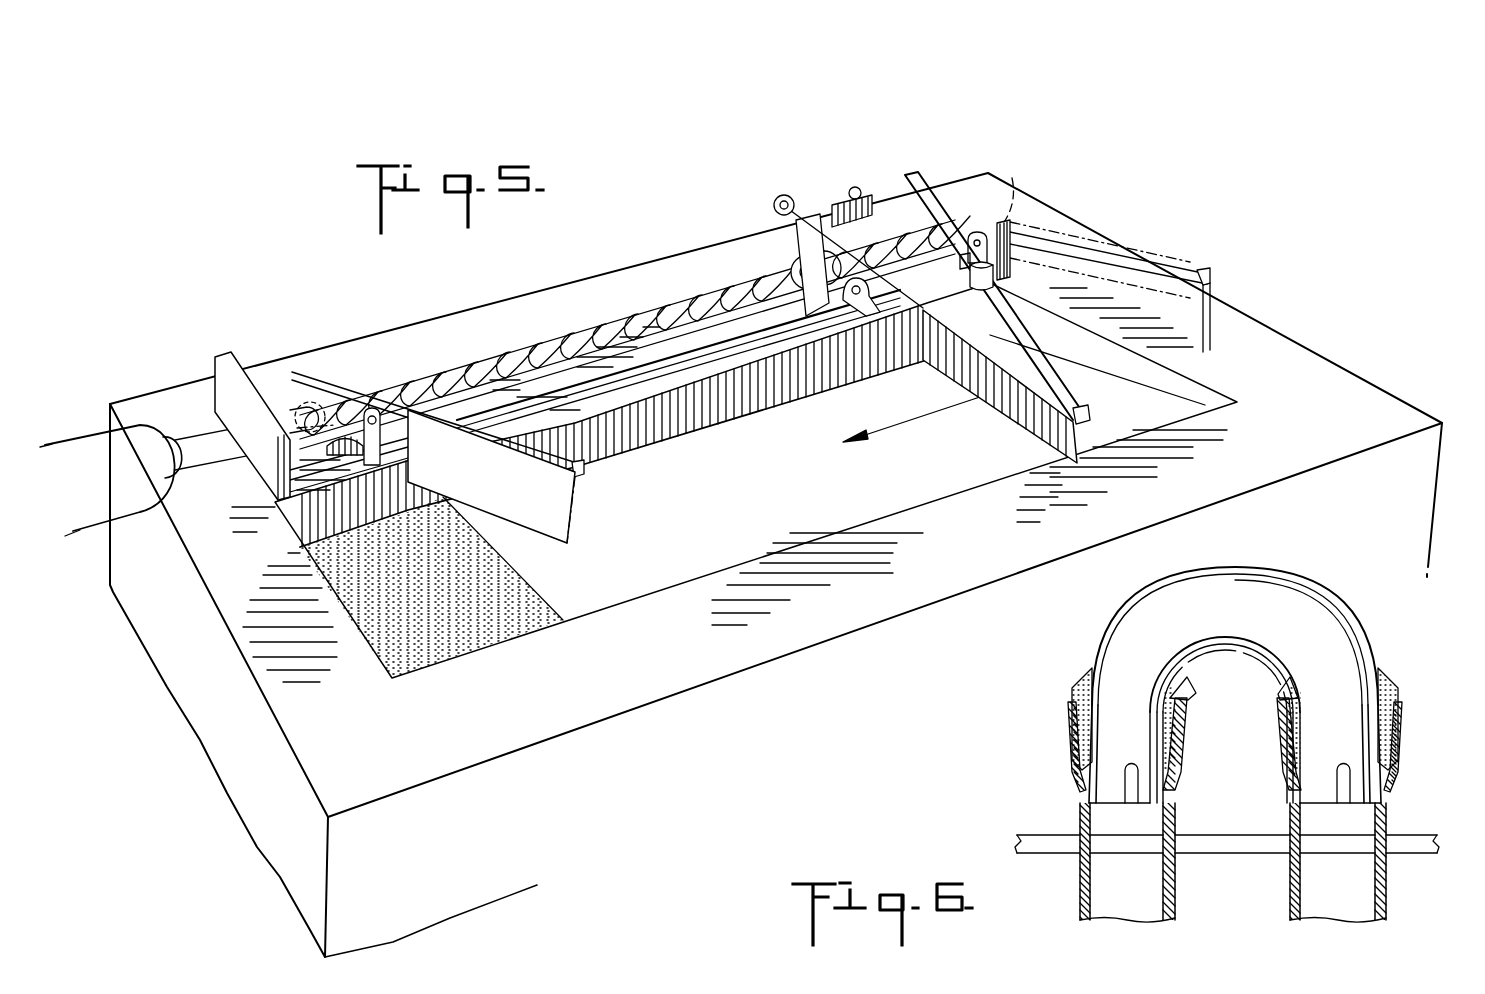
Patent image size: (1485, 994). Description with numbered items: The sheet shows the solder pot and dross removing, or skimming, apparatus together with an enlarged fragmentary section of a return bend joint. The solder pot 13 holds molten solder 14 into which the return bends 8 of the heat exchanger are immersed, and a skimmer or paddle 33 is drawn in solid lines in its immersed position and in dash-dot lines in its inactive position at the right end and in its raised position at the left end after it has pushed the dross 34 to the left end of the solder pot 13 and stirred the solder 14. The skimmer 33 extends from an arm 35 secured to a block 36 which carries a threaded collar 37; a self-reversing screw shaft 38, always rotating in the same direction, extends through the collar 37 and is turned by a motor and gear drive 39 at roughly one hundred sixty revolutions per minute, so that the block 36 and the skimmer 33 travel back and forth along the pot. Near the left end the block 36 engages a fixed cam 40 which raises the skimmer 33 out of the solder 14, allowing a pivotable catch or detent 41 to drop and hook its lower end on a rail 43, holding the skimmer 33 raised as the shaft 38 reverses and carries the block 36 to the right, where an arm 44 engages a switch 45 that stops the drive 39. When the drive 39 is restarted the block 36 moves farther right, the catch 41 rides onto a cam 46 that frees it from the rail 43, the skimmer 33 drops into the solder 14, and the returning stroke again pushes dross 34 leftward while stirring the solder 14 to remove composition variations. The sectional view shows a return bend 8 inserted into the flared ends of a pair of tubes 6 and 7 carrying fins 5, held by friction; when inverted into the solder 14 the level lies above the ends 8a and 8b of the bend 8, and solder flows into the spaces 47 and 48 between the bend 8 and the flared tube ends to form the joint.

In FIG. 6, the fins 5 is at (1231, 845).
In FIG. 6, the tube 6 is at (1172, 892).
In FIG. 6, the tube 7 is at (1292, 897).
In FIG. 6, the return bend 8 is at (1327, 622).
In FIG. 6, the end of return bend 8a is at (1100, 818).
In FIG. 6, the end of return bend 8b is at (1390, 815).
In FIG. 5, the solder pot 13 is at (594, 683).
In FIG. 5, the molten solder 14 is at (763, 498).
In FIG. 5, the skimmer or paddle 33 is at (567, 521).
In FIG. 5, the dross 34 is at (512, 585).
In FIG. 5, the arm 35 is at (1092, 420).
In FIG. 5, the block 36 is at (635, 317).
In FIG. 5, the threaded collar 37 is at (793, 262).
In FIG. 5, the self-reversing screw shaft 38 is at (645, 313).
In FIG. 5, the motor and gear drive 39 is at (128, 507).
In FIG. 5, the fixed cam 40 is at (332, 438).
In FIG. 5, the pivotable catch or detent 41 is at (380, 405).
In FIG. 5, the rail 43 is at (728, 345).
In FIG. 5, the arm 44 is at (791, 200).
In FIG. 5, the switch 45 is at (847, 193).
In FIG. 5, the cam 46 is at (1000, 265).
In FIG. 6, the space 47 is at (1080, 735).
In FIG. 6, the space 48 is at (1398, 733).